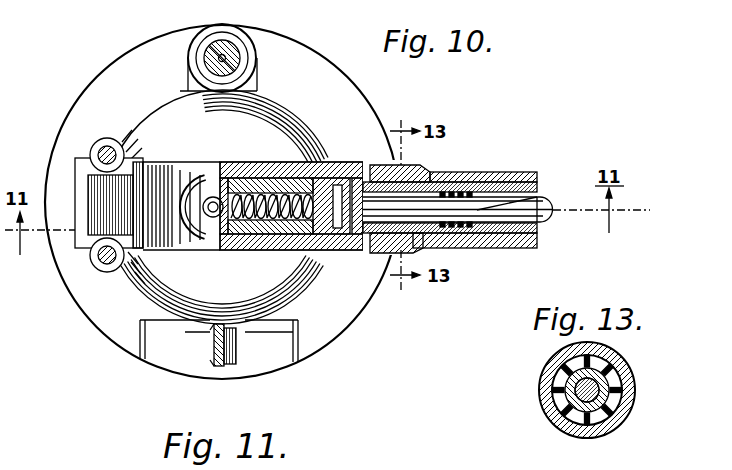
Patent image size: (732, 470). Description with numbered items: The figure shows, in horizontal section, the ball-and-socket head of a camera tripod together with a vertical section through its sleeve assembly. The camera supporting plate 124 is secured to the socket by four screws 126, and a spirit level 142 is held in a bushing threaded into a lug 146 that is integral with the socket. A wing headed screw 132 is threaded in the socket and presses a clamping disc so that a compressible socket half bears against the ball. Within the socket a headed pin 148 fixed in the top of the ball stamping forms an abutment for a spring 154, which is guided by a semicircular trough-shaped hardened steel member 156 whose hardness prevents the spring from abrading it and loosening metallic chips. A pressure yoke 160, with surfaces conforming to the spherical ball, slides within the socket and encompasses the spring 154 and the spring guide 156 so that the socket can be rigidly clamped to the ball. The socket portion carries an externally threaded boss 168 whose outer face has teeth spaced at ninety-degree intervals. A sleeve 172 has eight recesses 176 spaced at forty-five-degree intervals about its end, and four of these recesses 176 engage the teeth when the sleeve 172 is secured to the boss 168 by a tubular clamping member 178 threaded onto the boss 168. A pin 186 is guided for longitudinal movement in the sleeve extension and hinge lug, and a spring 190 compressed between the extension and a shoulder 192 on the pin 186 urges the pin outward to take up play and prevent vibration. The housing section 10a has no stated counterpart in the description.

In FIG. 10, the camera supporting plate 124 is at (103, 322).
In FIG. 10, the screws 126 is at (113, 242).
In FIG. 10, the wing headed screw 132 is at (187, 368).
In FIG. 10, the spirit level 142 is at (207, 53).
In FIG. 10, the lug 146 is at (257, 60).
In FIG. 10, the pin 148 is at (216, 204).
In FIG. 10, the spring 154 is at (250, 208).
In FIG. 10, the housing 10a is at (338, 162).
In FIG. 10, the hardened steel member 156 is at (322, 236).
In FIG. 10, the pressure yoke 160 is at (341, 230).
In FIG. 10, the externally threaded boss 168 is at (413, 174).
In FIG. 10, the tubular clamping member 178 is at (497, 174).
In FIG. 10, the spring 190 is at (478, 172).
In FIG. 10, the shoulder 192 is at (540, 190).
In FIG. 10, the pin 186 is at (544, 232).
In FIG. 13, the pin 186 is at (552, 378).
In FIG. 13, the sleeve 172 is at (630, 408).
In FIG. 13, the recesses 176 is at (552, 397).